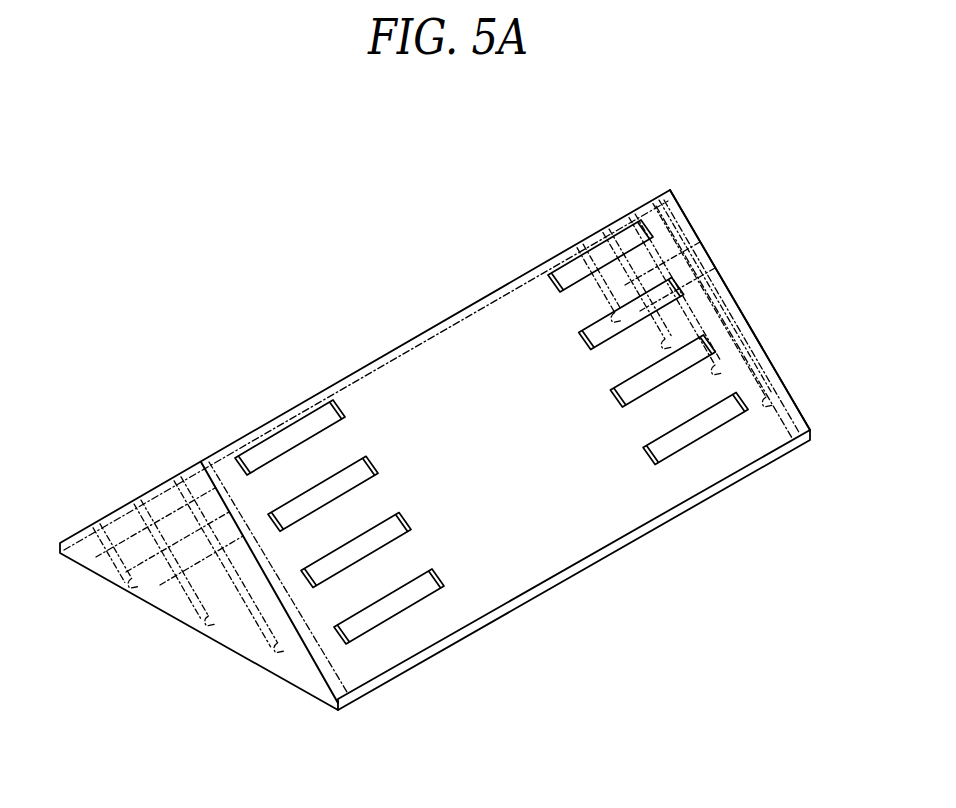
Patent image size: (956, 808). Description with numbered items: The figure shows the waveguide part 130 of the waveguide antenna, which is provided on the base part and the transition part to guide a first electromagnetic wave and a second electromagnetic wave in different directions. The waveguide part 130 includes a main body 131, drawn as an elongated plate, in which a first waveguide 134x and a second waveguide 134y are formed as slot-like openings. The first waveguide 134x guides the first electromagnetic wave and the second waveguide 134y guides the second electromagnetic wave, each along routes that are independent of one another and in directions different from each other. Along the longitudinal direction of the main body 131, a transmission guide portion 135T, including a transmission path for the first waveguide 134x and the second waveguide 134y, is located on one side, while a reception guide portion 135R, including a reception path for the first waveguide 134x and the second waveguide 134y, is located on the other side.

The waveguide part 130 is at (308, 187).
The main body 131 is at (744, 306).
The first waveguide 134x is at (707, 439).
The second waveguide 134y is at (444, 316).
The transmission guide portion 135T is at (284, 382).
The reception guide portion 135R is at (628, 185).